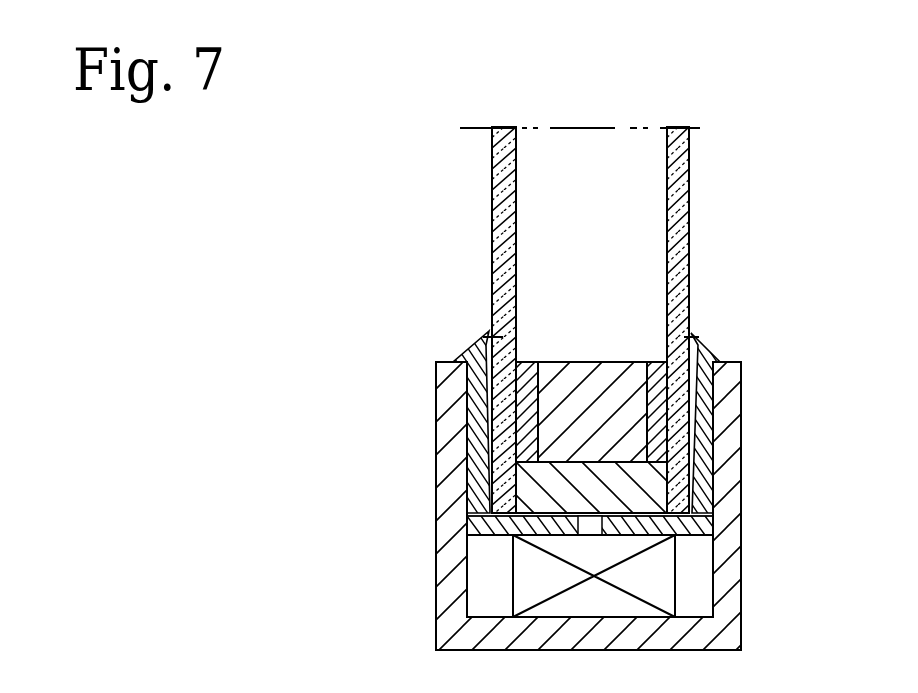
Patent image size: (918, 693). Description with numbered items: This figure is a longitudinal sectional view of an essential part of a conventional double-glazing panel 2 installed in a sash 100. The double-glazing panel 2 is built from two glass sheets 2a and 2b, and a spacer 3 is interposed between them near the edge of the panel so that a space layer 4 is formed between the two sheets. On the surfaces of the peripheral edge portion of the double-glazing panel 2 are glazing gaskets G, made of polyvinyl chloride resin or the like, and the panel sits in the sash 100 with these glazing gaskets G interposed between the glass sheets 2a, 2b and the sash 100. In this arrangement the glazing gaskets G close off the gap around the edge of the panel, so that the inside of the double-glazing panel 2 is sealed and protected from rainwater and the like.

The double-glazing panel 2 is at (593, 320).
The glass sheet 2a is at (500, 184).
The glass sheet 2b is at (687, 192).
The spacer 3 is at (577, 356).
The space layer 4 is at (648, 265).
The glazing gasket G is at (463, 470).
The sash 100 is at (746, 532).